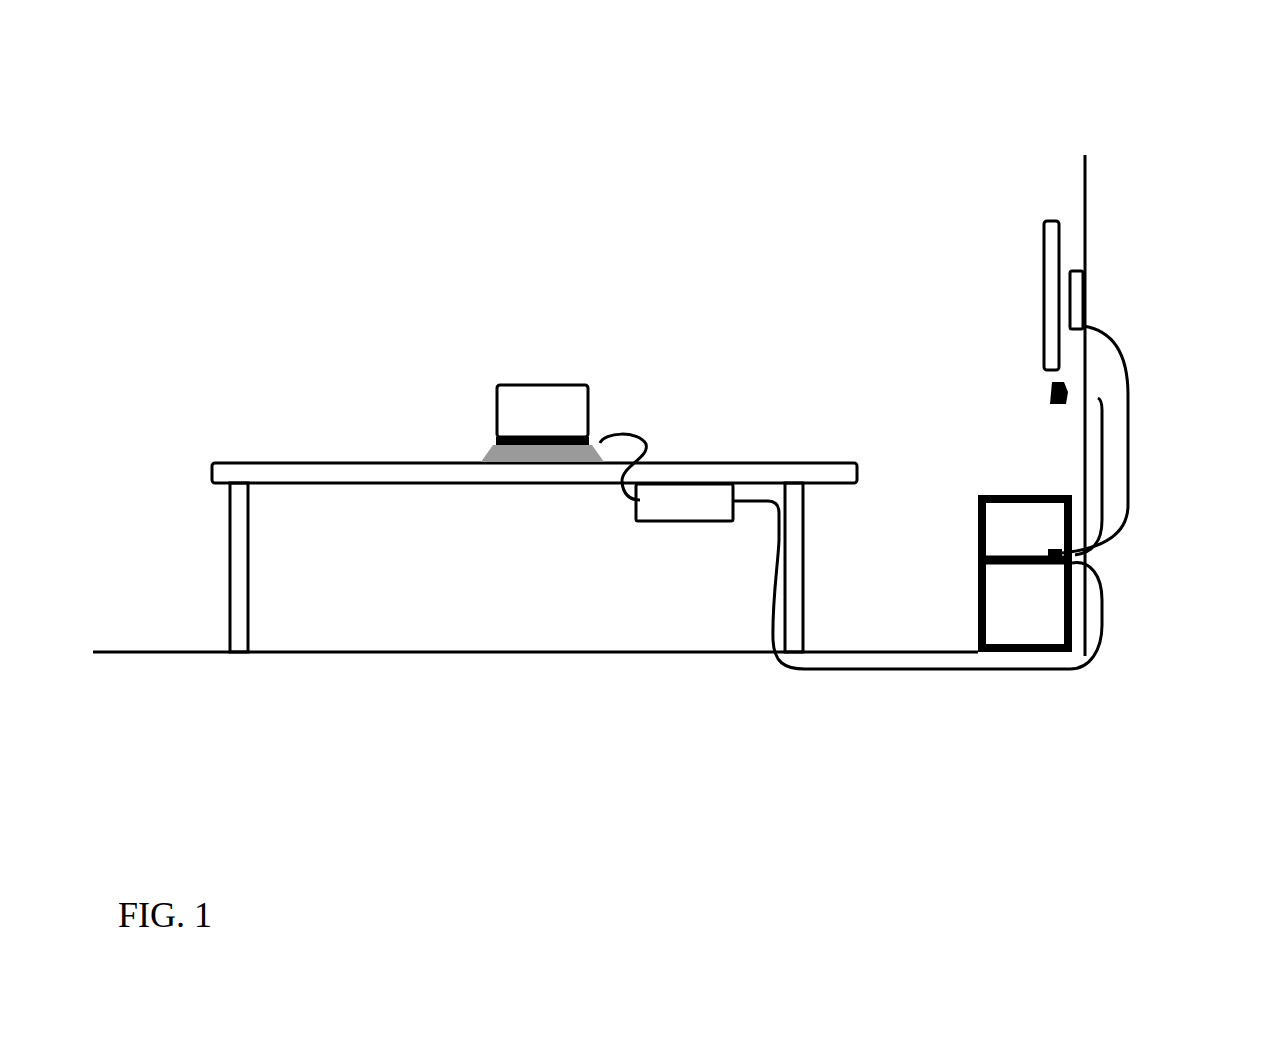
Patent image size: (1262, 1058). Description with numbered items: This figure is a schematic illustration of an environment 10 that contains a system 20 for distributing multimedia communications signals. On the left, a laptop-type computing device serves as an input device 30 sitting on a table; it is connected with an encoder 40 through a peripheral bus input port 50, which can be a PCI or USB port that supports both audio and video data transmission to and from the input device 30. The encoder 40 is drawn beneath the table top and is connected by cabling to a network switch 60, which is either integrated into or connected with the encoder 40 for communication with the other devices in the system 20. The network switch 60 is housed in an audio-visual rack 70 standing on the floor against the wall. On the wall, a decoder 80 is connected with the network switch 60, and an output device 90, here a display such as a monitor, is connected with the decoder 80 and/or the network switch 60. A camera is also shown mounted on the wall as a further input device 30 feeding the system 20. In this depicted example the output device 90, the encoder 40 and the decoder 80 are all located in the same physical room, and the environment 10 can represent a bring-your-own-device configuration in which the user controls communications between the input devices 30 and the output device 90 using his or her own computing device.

The environment 10 is at (712, 45).
The system 20 is at (652, 197).
The input device 30 is at (462, 374).
The encoder 40 is at (655, 532).
The peripheral bus input port 50 is at (625, 509).
The network switch 60 is at (1008, 536).
The audio-visual (AV) rack 70 is at (1074, 573).
The decoder 80 is at (1086, 285).
The output device 90 is at (1058, 221).